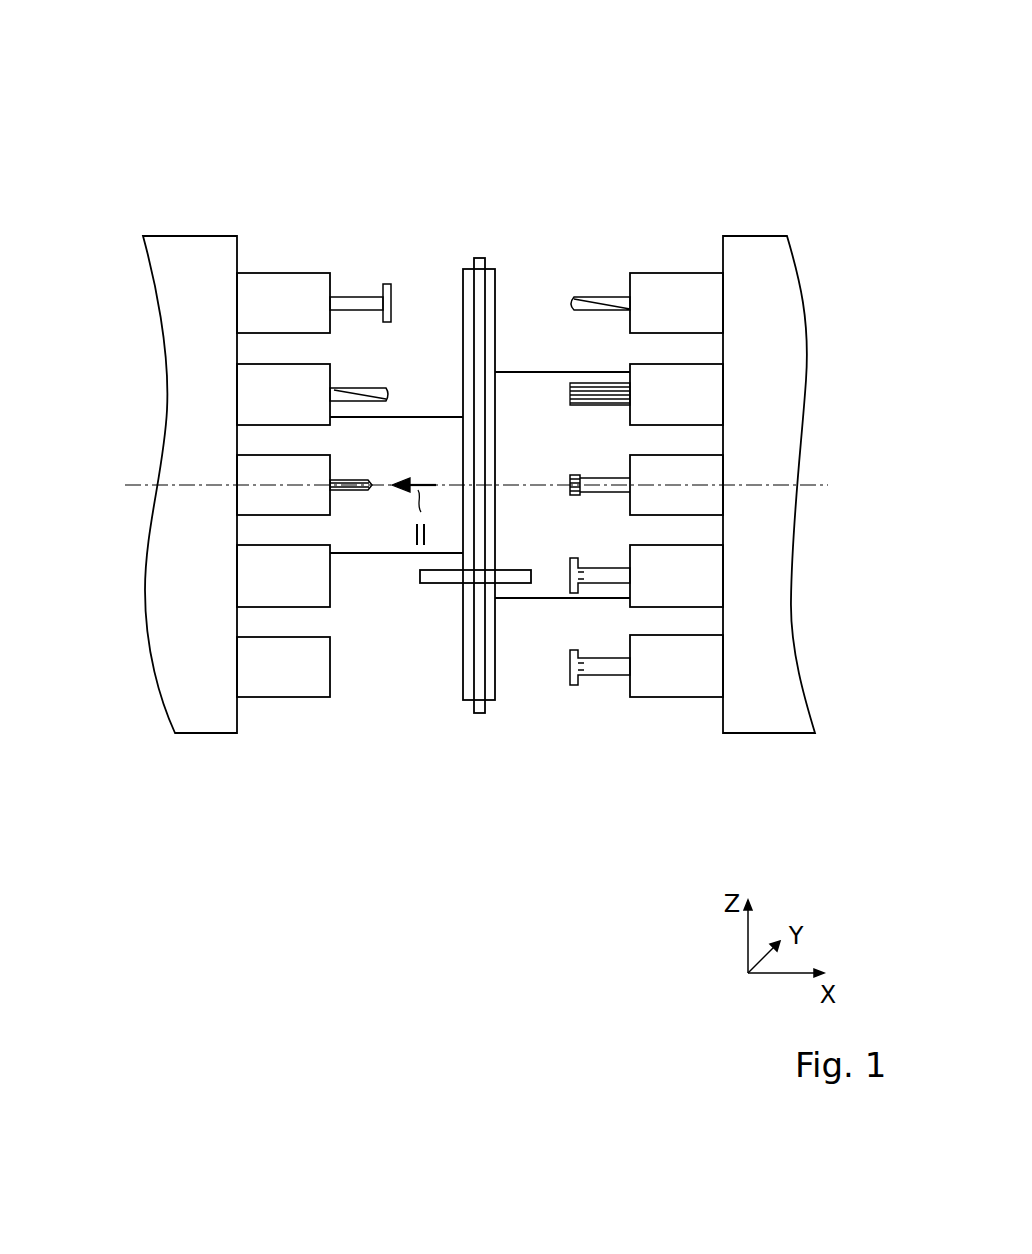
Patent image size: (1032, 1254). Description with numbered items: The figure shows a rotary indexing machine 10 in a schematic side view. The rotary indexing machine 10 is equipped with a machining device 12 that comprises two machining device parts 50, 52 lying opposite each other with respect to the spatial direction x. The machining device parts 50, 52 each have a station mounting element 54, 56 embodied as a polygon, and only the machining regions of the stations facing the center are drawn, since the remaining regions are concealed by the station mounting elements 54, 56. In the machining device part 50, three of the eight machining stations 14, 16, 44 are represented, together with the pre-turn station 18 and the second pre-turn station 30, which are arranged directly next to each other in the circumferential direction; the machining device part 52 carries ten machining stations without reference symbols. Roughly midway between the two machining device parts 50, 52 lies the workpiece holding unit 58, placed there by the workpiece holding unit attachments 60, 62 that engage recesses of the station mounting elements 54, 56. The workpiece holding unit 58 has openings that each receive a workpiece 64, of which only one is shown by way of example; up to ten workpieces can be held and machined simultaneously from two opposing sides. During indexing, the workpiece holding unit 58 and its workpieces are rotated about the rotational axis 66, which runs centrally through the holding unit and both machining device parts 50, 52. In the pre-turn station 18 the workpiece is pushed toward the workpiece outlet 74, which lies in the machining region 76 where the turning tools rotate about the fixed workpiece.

The rotary indexing machine 10 is at (807, 56).
The machining device 12 is at (807, 56).
The machining station 14 is at (283, 497).
The machining station 16 is at (270, 397).
The pre-turn station 18 is at (345, 628).
The second pre-turn station 30 is at (268, 670).
The machining station 44 is at (277, 303).
The machining device part 50 is at (243, 215).
The machining device part 52 is at (724, 215).
The station mounting element 54 is at (172, 592).
The station mounting element 56 is at (785, 453).
The workpiece holding unit 58 is at (470, 275).
The workpiece holding unit attachment 60 is at (435, 445).
The workpiece holding unit attachment 62 is at (535, 390).
The workpiece 64 is at (515, 580).
The rotational axis 66 is at (805, 485).
The workpiece outlet 74 is at (330, 575).
The machining region 76 is at (310, 592).